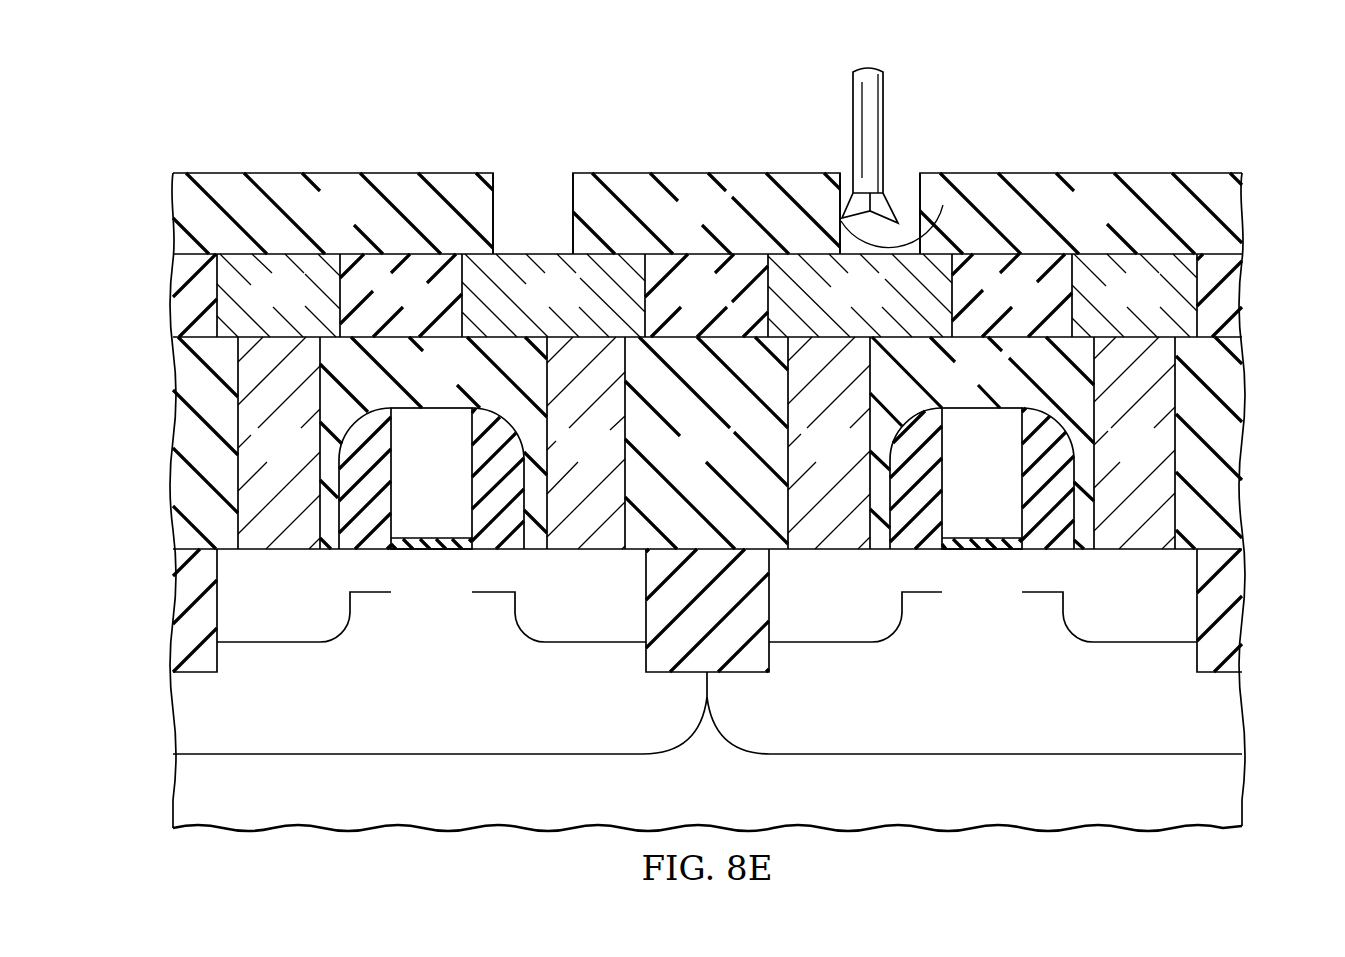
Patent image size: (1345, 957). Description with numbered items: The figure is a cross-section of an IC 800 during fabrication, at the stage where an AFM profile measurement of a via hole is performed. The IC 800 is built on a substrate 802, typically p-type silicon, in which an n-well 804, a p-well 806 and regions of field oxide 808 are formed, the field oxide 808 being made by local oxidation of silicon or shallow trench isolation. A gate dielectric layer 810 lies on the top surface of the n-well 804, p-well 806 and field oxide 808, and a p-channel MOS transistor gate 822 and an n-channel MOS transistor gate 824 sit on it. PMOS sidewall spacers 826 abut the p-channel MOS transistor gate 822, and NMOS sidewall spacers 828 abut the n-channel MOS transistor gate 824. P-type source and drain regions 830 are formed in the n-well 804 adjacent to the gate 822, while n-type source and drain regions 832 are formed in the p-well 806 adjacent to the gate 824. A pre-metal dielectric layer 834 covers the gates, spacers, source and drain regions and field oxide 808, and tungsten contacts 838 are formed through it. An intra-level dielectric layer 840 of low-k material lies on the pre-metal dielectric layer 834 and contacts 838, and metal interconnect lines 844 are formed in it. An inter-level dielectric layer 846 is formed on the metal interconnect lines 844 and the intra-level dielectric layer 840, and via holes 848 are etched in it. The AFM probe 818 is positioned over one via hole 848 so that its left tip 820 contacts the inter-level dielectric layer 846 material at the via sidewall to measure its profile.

The IC 800 is at (214, 116).
The substrate 802 is at (685, 797).
The n-well 804 is at (410, 717).
The p-well 806 is at (960, 717).
The field oxide 808 is at (172, 647).
The gate dielectric layer 810 is at (428, 553).
The AFM probe 818 is at (838, 113).
The left tip 820 is at (943, 205).
The p-channel MOS transistor gate 822 is at (410, 484).
The n-channel MOS transistor gate 824 is at (962, 484).
The PMOS sidewall spacers 826 is at (358, 545).
The NMOS sidewall spacers 828 is at (908, 545).
The p-type source and drain regions 830 is at (262, 606).
The n-type source and drain regions 832 is at (810, 606).
The pre-metal dielectric layer 834 is at (172, 420).
The contacts 838 is at (258, 459).
The intra-level dielectric layer 840 is at (172, 283).
The metal interconnect lines 844 is at (258, 304).
The inter-level dielectric layer 846 is at (310, 222).
The via holes 848 is at (514, 175).